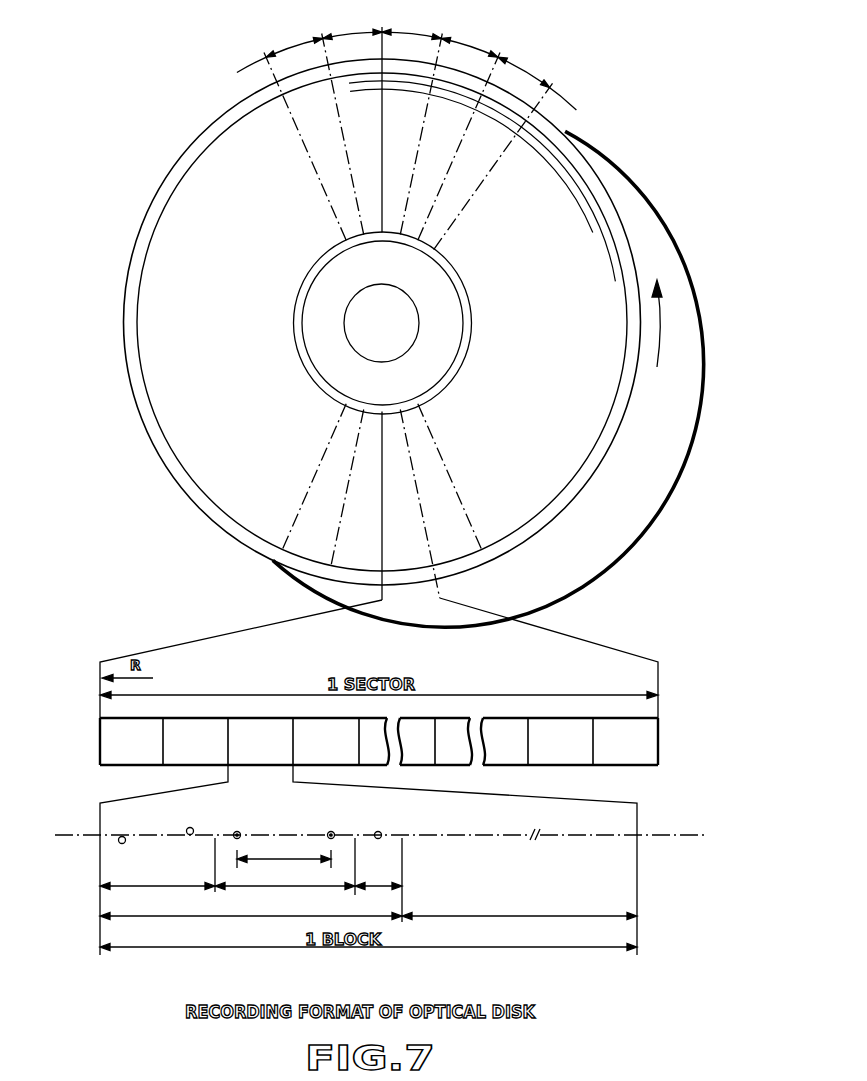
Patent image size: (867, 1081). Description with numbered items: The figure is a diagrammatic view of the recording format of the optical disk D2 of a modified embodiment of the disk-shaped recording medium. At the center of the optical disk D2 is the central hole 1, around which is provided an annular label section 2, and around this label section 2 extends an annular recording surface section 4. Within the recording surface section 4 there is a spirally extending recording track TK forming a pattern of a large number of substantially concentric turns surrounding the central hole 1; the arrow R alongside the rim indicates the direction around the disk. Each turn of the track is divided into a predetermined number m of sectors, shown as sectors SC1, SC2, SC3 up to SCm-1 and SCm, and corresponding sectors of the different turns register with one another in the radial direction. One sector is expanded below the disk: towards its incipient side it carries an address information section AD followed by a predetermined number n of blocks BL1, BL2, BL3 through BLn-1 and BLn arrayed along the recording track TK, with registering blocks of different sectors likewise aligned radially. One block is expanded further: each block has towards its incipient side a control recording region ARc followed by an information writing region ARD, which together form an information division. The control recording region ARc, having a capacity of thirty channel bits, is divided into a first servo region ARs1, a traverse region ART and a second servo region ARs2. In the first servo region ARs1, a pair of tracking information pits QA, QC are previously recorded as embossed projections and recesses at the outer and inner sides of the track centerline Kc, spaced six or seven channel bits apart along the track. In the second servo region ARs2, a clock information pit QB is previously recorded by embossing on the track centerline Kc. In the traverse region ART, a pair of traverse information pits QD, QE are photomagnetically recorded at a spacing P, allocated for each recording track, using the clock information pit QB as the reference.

The central hole 1 is at (346, 326).
The annular label section 2 is at (312, 311).
The annular recording surface section 4 is at (582, 430).
The recording track TK is at (586, 194).
The optical disk D2 is at (574, 516).
The rotation direction R is at (664, 323).
The first sector SC1 is at (407, 33).
The second sector SC2 is at (463, 42).
The third sector SC3 is at (523, 72).
The m-th sector SCm is at (347, 35).
The (m-1)th sector SCm-1 is at (283, 54).
The address information section AD is at (131, 741).
The first block BL1 is at (195, 741).
The second block BL2 is at (260, 741).
The third block BL3 is at (326, 741).
The (n-1)th block BLn-1 is at (560, 741).
The n-th block BLn is at (625, 741).
The track centerline Kc is at (368, 836).
The tracking information pit QA is at (125, 836).
The clock information pit QB is at (379, 831).
The tracking information pit QC is at (190, 827).
The traverse information pit QD is at (237, 831).
The traverse information pit QE is at (331, 831).
The spacing P is at (284, 852).
The first servo region ARs1 is at (157, 879).
The traverse region ART is at (285, 879).
The second servo region ARs2 is at (378, 879).
The control recording region ARc is at (251, 909).
The information writing region ARD is at (519, 909).